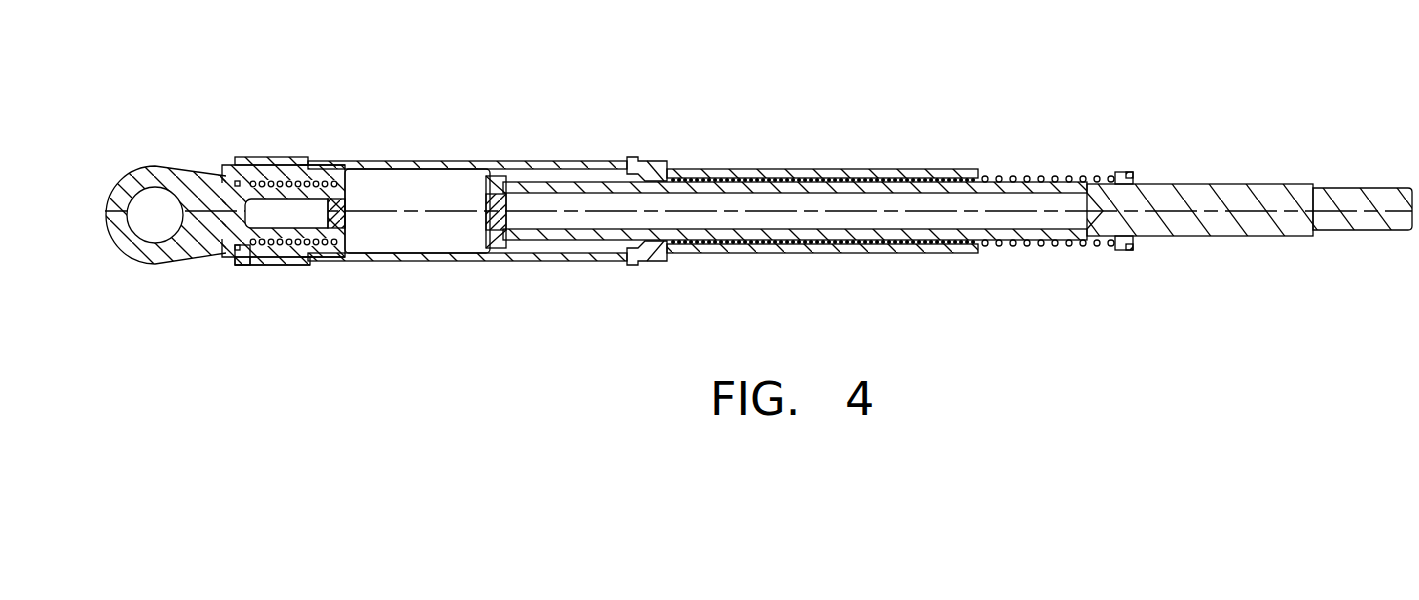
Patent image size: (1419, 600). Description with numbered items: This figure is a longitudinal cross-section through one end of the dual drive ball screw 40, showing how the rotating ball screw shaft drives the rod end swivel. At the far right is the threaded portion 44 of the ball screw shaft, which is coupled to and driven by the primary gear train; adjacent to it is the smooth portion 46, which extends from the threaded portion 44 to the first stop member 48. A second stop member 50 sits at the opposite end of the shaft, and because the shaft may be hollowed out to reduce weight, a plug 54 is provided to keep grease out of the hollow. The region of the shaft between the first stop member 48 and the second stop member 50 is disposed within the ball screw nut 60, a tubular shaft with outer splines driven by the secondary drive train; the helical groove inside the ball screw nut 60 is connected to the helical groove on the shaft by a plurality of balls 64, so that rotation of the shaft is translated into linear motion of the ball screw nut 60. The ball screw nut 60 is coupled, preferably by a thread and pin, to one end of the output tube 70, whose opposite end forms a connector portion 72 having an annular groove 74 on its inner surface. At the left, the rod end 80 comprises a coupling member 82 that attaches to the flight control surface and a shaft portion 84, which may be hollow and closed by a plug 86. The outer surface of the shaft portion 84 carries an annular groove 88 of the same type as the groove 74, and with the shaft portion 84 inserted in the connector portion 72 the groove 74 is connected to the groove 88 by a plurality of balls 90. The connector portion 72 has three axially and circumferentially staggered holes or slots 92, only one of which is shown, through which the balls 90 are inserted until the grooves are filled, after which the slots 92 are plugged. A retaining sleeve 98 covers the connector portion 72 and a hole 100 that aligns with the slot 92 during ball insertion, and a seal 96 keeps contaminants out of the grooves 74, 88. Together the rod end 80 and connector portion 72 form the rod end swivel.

The dual drive ball screw 40 is at (1002, 92).
The threaded portion 44 is at (1344, 188).
The smooth portion 46 is at (1203, 184).
The first stop member 48 is at (1121, 172).
The second stop member 50 is at (502, 175).
The plug 54 is at (484, 207).
The ball screw nut 60 is at (712, 169).
The balls 64 is at (957, 248).
The output tube 70 is at (566, 160).
The connector portion 72 is at (313, 258).
The annular groove 74 is at (248, 157).
The rod end 80 is at (132, 168).
The coupling member 82 is at (172, 257).
The shaft portion 84 is at (346, 188).
The plug 86 is at (347, 218).
The annular groove 88 is at (318, 172).
The balls 90 is at (336, 253).
The holes or slots 92 is at (264, 258).
The seal 96 is at (245, 258).
The retaining sleeve 98 is at (300, 157).
The hole 100 is at (257, 274).